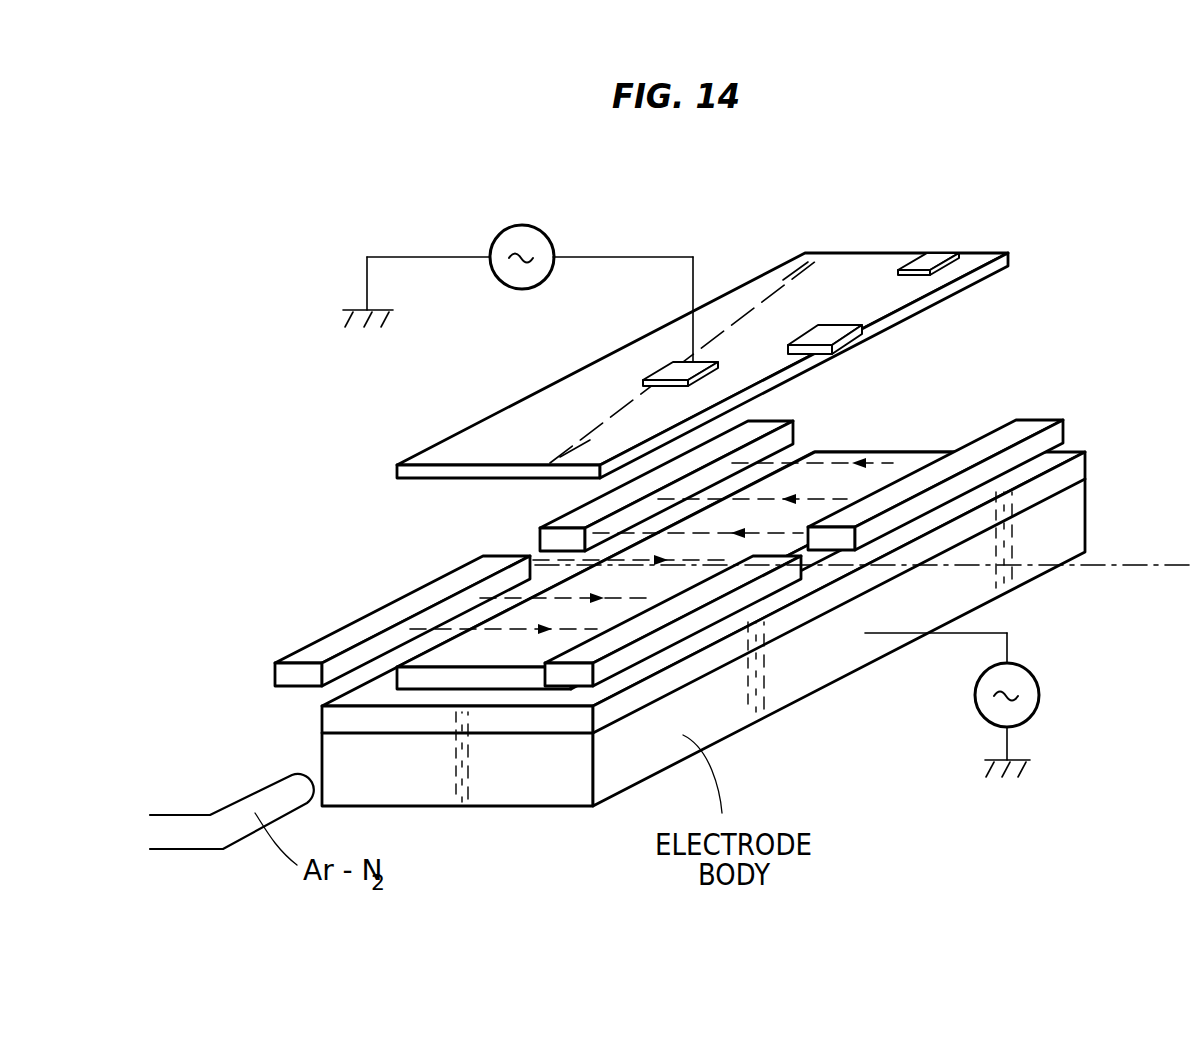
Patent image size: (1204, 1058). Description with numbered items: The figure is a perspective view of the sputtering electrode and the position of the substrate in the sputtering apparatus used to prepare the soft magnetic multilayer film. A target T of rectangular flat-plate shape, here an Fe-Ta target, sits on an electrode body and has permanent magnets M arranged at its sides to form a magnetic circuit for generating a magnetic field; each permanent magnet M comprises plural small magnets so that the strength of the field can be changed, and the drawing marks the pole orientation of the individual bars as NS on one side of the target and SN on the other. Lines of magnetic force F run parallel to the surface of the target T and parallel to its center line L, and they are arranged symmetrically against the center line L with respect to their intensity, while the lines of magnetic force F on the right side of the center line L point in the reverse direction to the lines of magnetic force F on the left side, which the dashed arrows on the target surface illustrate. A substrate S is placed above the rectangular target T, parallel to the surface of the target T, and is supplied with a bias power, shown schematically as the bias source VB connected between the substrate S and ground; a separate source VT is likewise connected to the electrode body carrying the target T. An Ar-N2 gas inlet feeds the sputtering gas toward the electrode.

The substrate S is at (931, 270).
The target T is at (897, 467).
The permanent magnet M is at (632, 640).
The permanent magnet (N-S pole) NS is at (557, 543).
The permanent magnet (S-N pole) SN is at (308, 673).
The lines of magnetic force F is at (606, 592).
The center line L is at (863, 550).
The bias power source VB is at (529, 226).
The target power source VT is at (1019, 668).